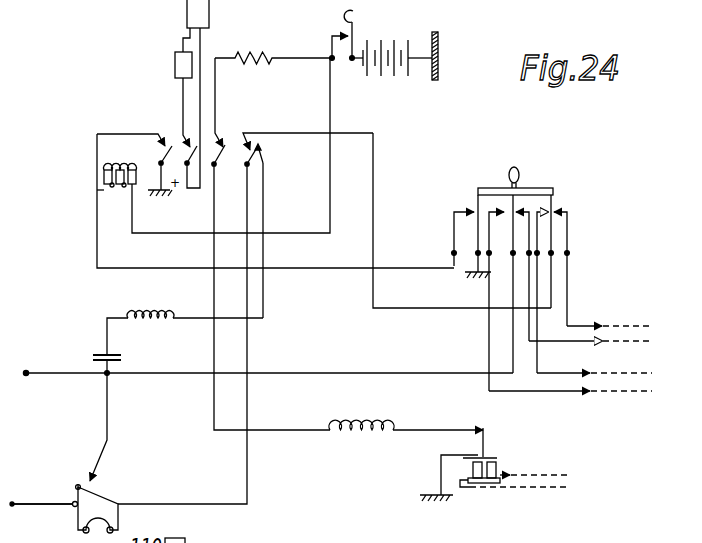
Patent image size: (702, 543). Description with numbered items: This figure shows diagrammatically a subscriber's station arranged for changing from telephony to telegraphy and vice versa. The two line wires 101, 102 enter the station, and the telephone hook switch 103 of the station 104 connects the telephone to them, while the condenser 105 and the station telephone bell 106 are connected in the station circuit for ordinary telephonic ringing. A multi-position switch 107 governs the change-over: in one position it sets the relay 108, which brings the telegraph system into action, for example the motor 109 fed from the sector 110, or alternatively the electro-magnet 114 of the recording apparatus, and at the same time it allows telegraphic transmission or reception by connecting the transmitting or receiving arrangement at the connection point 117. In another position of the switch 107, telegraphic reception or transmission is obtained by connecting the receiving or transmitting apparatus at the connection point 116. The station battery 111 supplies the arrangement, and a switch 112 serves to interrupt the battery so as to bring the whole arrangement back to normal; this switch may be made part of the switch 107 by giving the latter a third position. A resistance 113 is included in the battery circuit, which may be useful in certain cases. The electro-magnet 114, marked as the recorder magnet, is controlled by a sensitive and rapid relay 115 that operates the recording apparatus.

The line wire 101 is at (263, 361).
The line wire 102 is at (41, 493).
The telephone hook switch 103 is at (74, 485).
The station 104 is at (98, 515).
The condenser 105 is at (124, 358).
The station telephone bell 106 is at (185, 322).
The switch 107 is at (511, 276).
The relay 108 is at (118, 163).
The motor 109 is at (175, 66).
The sector 110 is at (186, 13).
The station battery 111 is at (394, 47).
The switch 112 is at (327, 30).
The resistance 113 is at (273, 46).
The electro-magnet 114 is at (360, 441).
The relay 115 is at (495, 477).
The connection point 116 is at (590, 322).
The connection point 117 is at (570, 372).